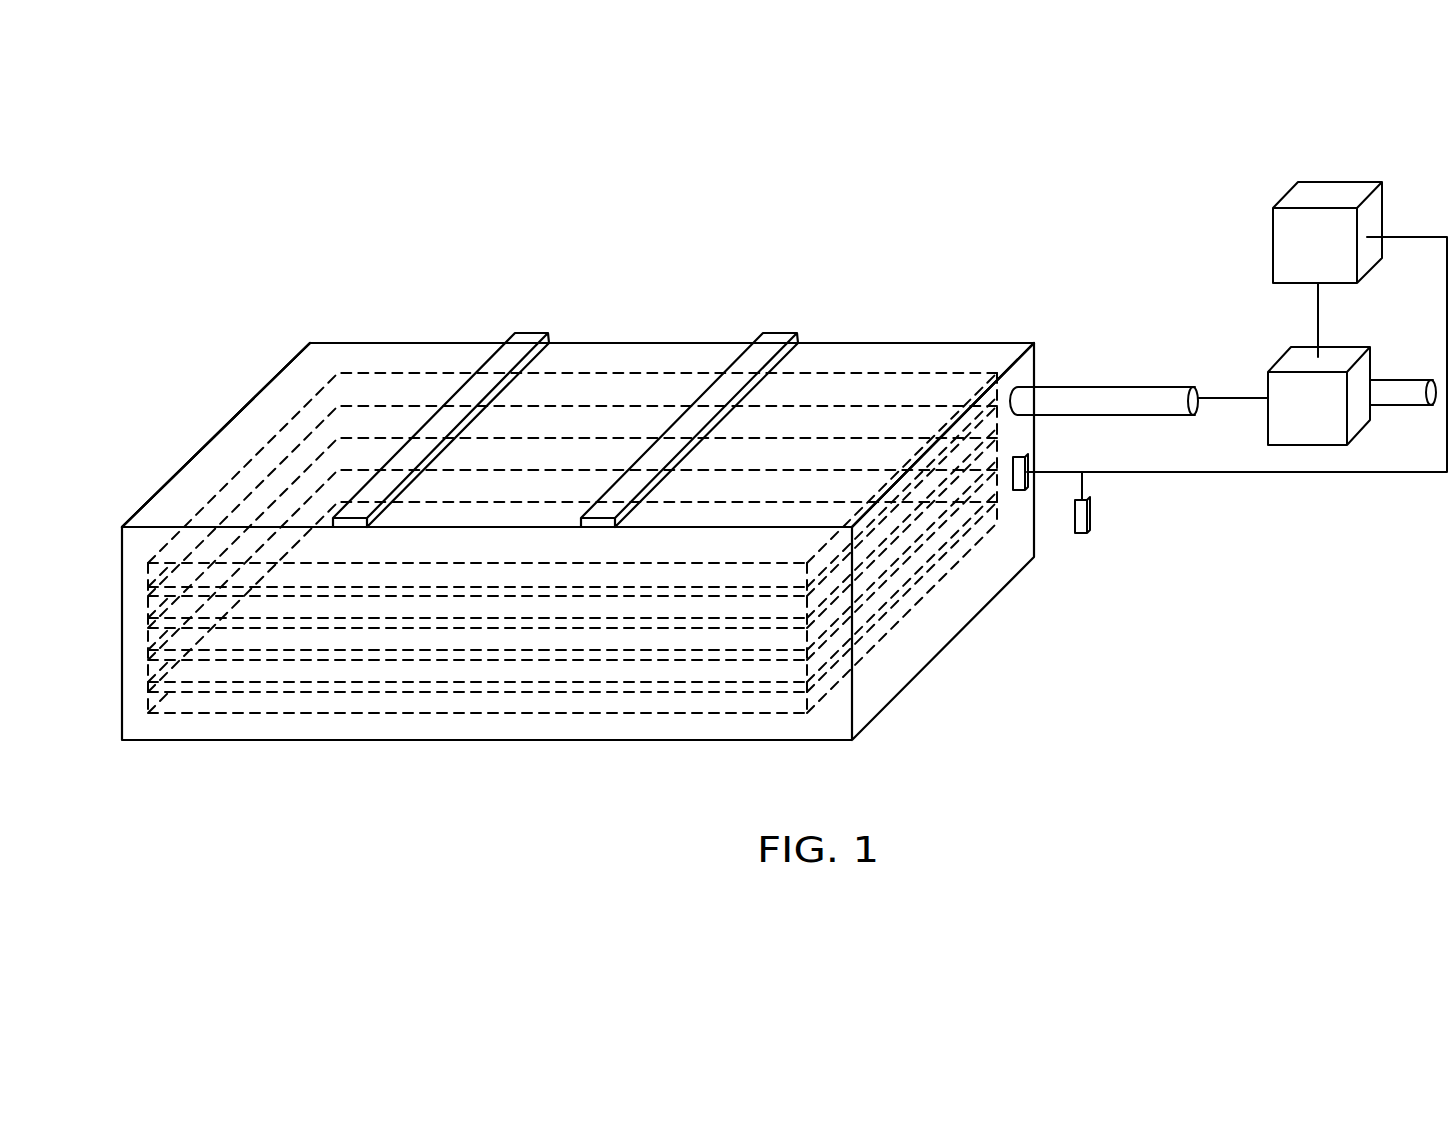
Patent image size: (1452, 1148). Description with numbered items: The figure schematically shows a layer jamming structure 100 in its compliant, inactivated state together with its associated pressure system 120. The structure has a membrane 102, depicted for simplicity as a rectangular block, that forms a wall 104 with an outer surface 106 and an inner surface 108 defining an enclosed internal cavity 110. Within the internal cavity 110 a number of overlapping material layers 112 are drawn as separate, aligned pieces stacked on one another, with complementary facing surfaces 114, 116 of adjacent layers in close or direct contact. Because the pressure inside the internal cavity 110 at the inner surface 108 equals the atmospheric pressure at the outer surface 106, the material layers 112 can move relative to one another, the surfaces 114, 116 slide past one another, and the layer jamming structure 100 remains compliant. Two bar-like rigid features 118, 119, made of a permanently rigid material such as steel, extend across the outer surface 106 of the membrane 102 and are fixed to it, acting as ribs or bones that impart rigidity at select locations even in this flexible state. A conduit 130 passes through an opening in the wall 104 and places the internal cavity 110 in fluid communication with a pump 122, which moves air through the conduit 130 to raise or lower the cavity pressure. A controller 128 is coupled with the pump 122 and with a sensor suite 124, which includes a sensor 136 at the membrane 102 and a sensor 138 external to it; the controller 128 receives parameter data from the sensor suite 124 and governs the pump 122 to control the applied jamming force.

The layer jamming structure 100 is at (710, 285).
The membrane 102 is at (370, 343).
The wall 104 is at (566, 352).
The outer surface 106 is at (307, 378).
The inner surface 108 is at (257, 423).
The internal cavity 110 is at (853, 358).
The material layers 112 is at (594, 504).
The surface 114 is at (927, 537).
The surface 116 is at (912, 552).
The rigid feature 118 is at (770, 335).
The rigid feature 119 is at (527, 335).
The pressure system 120 is at (1185, 240).
The pump 122 is at (1341, 431).
The sensor suite 124 is at (1086, 562).
The controller 128 is at (1351, 268).
The conduit 130 is at (1127, 392).
The sensor 136 is at (1027, 472).
The sensor 138 is at (1088, 513).